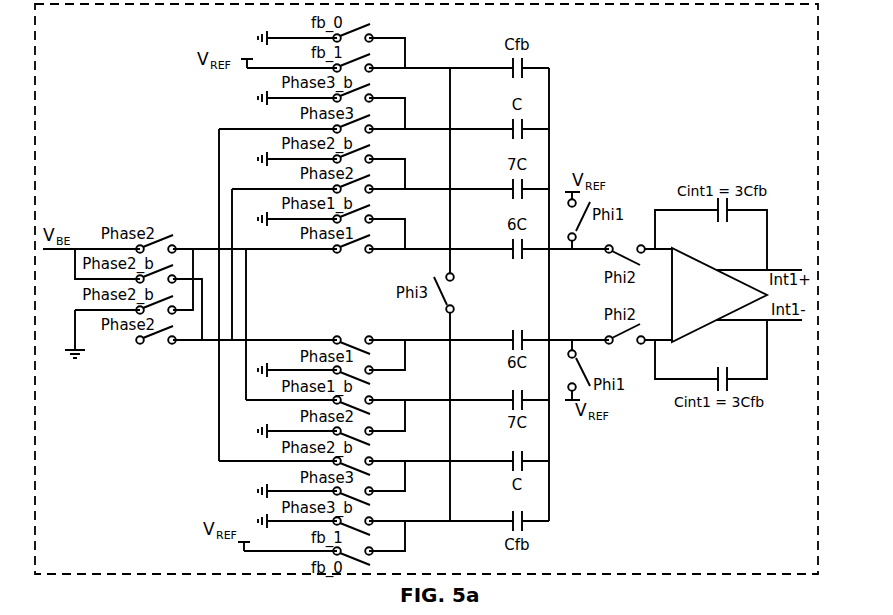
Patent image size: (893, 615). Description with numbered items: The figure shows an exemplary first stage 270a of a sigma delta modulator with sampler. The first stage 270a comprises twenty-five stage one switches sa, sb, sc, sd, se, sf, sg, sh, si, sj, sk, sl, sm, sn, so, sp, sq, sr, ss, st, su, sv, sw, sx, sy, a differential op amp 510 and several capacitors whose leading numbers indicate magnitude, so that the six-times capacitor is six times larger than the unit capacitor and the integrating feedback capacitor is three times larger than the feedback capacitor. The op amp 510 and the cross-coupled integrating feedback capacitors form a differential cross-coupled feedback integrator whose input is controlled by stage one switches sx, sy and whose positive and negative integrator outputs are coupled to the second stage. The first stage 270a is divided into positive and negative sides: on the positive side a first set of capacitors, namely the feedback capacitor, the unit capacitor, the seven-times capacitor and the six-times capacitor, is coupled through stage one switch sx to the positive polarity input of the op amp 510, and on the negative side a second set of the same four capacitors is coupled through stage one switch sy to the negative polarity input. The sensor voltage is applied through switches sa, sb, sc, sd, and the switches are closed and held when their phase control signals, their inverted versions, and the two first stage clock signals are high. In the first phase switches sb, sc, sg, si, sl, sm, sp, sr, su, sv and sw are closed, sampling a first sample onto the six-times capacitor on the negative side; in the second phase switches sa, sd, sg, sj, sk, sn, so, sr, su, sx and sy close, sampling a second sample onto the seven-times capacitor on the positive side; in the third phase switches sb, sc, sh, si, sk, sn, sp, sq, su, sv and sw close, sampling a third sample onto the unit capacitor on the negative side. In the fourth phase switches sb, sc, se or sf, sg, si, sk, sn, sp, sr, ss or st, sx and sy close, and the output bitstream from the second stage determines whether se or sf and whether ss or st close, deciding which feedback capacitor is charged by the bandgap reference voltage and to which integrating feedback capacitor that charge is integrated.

The first stage 270a is at (809, 36).
The differential op amp 510 is at (682, 305).
The stage one switch sa is at (164, 241).
The stage one switch sb is at (164, 271).
The stage one switch sc is at (164, 302).
The stage one switch sd is at (164, 332).
The stage one switch se is at (361, 30).
The stage one switch sf is at (360, 60).
The stage one switch sg is at (361, 90).
The stage one switch sh is at (361, 121).
The stage one switch si is at (359, 151).
The stage one switch sj is at (359, 181).
The stage one switch sk is at (361, 211).
The stage one switch sl is at (359, 241).
The stage one switch sm is at (363, 347).
The stage one switch sn is at (361, 377).
The stage one switch so is at (361, 407).
The stage one switch sp is at (361, 438).
The stage one switch sq is at (361, 468).
The stage one switch sr is at (360, 498).
The stage one switch ss is at (360, 528).
The stage one switch st is at (359, 558).
The stage one switch su is at (454, 293).
The stage one switch sv is at (573, 220).
The stage one switch sw is at (573, 370).
The stage one switch sx is at (625, 247).
The stage one switch sy is at (625, 341).